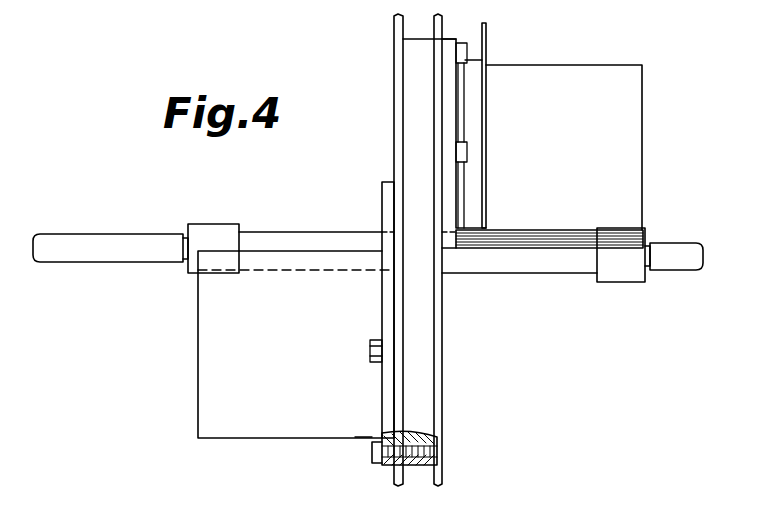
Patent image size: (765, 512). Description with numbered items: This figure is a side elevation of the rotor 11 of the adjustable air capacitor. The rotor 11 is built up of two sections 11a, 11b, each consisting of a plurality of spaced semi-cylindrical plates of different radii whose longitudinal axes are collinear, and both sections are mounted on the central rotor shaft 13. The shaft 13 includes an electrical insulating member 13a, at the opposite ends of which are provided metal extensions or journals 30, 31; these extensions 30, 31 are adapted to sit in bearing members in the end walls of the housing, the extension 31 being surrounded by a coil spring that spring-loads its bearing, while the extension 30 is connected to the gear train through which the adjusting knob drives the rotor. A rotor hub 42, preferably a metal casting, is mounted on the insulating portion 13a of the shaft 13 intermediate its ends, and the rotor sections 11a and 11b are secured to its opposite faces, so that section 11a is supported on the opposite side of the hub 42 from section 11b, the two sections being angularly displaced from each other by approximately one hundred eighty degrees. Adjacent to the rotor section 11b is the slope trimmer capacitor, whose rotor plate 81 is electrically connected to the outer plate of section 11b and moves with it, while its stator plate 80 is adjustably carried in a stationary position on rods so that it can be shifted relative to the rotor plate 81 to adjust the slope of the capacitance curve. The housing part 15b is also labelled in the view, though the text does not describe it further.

The rotor 11 is at (372, 121).
The rotor section 11a is at (212, 355).
The rotor section 11b is at (637, 158).
The rotor shaft 13 is at (510, 268).
The electrical insulating member 13a is at (333, 237).
The arm 15b is at (255, 0).
The metal extension 30 is at (140, 242).
The metal extension 31 is at (668, 247).
The rotor hub 42 is at (413, 40).
The stator plate 80 is at (481, 114).
The rotor plate 81 is at (485, 43).